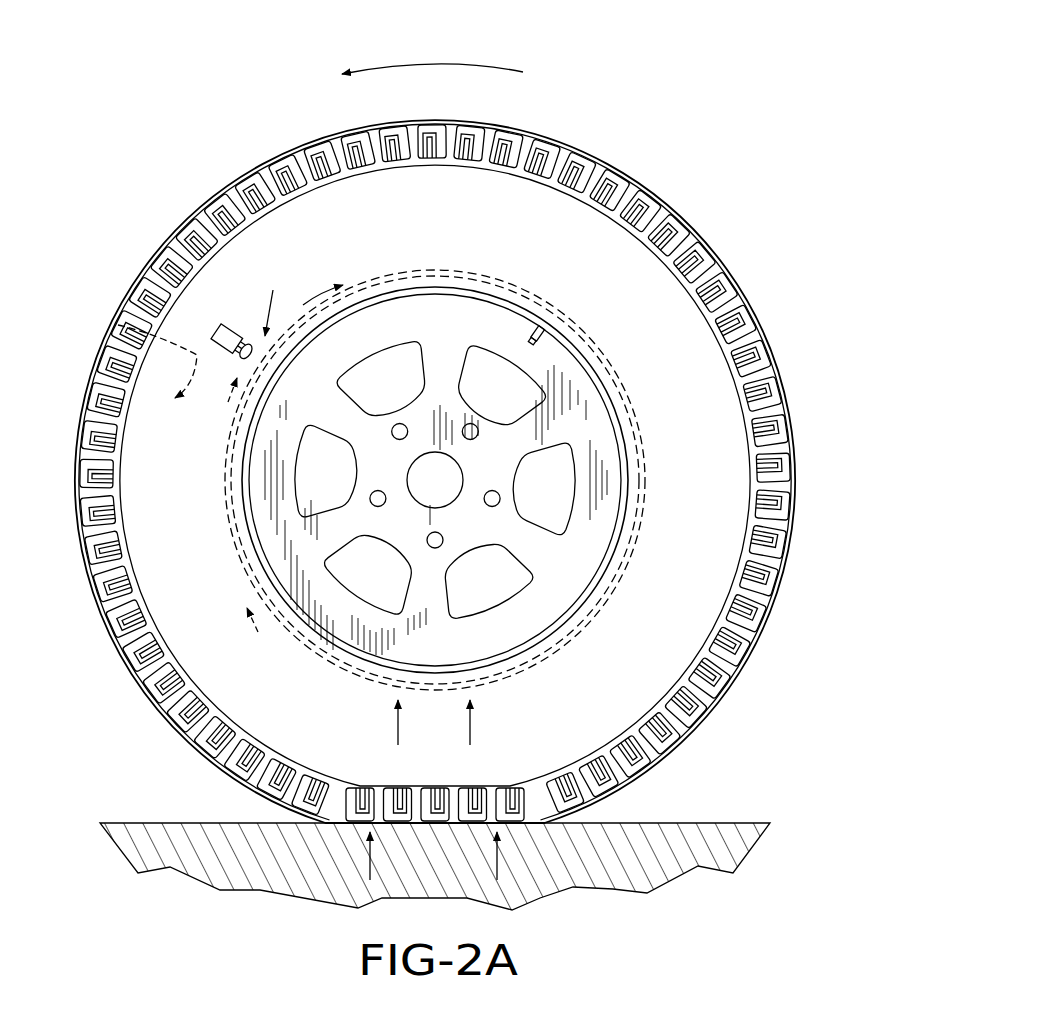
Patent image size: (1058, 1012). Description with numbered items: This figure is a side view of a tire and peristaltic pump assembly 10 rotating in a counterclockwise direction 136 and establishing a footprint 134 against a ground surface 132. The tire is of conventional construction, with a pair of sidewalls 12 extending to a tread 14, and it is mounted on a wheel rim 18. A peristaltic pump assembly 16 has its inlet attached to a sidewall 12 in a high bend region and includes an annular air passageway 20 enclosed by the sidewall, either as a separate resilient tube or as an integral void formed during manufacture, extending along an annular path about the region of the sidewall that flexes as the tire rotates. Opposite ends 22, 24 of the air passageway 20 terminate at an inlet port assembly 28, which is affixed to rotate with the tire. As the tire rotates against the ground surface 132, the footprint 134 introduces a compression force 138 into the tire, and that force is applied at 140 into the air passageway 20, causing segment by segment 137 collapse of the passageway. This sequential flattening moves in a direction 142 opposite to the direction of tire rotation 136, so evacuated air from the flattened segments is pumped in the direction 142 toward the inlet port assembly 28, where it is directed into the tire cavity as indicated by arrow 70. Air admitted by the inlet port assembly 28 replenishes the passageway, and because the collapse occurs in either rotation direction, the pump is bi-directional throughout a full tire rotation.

The tire assembly 10 is at (430, 442).
The sidewalls 12 is at (598, 252).
The tread 14 is at (590, 160).
The peristaltic pump assembly 16 is at (724, 290).
The wheel rim 18 is at (650, 428).
The air passageway 20 is at (650, 520).
The end of the air passageway 22 is at (262, 360).
The end of the air passageway 24 is at (266, 342).
The inlet port assembly 28 is at (212, 322).
The arrow indicating air input into the tire cavity 70 is at (112, 322).
The ground surface 132 is at (670, 823).
The footprint 134 is at (343, 824).
The counterclockwise direction 136 is at (508, 70).
The segment by segment sequential flattening 137 is at (437, 690).
The compression force 138 is at (370, 868).
The application of compression force into the air passageway 140 is at (398, 735).
The direction of air flow 142 is at (620, 358).